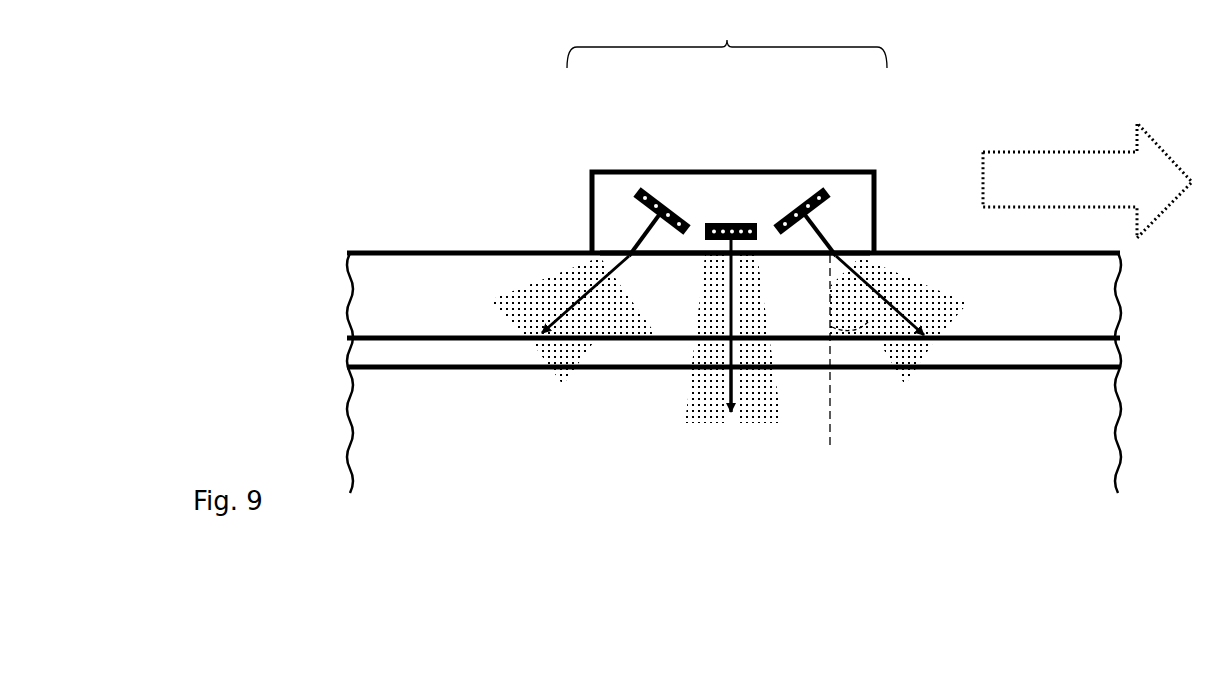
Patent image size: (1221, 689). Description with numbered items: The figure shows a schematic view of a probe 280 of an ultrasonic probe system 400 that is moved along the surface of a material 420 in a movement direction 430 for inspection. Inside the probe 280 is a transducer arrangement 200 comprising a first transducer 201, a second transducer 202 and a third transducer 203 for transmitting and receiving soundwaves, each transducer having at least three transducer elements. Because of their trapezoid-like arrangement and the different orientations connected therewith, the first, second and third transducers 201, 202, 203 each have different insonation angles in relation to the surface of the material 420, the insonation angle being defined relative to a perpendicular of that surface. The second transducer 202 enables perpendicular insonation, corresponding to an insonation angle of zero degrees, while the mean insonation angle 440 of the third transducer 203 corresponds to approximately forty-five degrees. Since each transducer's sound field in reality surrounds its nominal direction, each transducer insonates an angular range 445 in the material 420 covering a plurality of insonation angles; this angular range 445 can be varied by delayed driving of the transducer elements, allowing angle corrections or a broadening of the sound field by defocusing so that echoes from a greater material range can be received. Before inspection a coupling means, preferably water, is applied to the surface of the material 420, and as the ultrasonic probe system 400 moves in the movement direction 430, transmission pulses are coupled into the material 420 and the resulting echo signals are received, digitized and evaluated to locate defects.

The transducer arrangement 200 is at (727, 37).
The first transducer 201 is at (632, 192).
The second transducer 202 is at (726, 200).
The third transducer 203 is at (798, 194).
The probe 280 is at (586, 170).
The ultrasonic probe system 400 is at (472, 183).
The material 420 is at (901, 221).
The movement direction 430 is at (1050, 124).
The mean insonation angle 440 is at (842, 321).
The angular range 445 is at (692, 405).